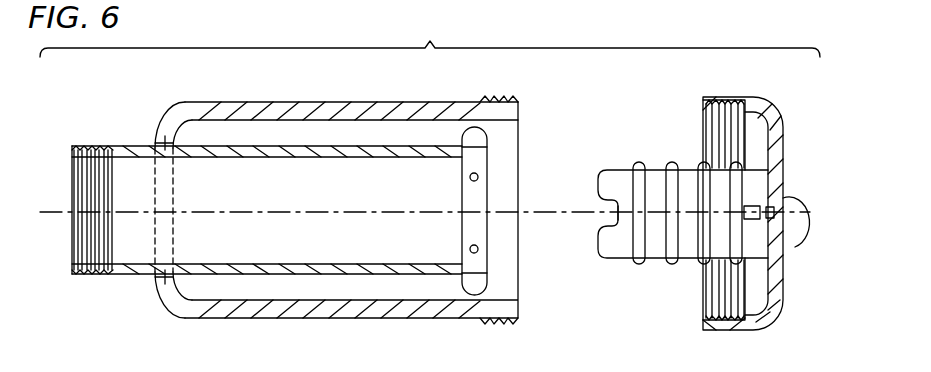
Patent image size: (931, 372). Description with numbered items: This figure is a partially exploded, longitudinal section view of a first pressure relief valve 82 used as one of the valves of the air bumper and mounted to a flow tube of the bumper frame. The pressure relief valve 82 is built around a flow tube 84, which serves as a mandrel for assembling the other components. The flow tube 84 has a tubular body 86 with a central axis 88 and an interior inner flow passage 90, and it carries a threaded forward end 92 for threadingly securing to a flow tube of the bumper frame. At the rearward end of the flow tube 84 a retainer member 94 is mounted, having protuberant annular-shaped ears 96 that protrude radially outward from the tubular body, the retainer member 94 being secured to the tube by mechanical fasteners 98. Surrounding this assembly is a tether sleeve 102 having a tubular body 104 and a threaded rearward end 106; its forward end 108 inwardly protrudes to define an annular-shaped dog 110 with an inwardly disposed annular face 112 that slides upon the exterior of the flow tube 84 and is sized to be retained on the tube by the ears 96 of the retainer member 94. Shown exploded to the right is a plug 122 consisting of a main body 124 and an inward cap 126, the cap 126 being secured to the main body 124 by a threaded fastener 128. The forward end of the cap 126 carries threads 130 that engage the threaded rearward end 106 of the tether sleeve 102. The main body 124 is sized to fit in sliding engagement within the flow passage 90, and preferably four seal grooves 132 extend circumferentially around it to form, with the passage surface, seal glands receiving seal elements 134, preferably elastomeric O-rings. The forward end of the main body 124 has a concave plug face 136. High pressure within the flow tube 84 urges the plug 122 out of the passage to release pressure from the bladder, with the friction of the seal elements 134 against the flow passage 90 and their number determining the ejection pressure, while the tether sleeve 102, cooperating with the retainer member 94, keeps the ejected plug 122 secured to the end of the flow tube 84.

The pressure relief valve 82 is at (140, 132).
The flow tube 84 is at (349, 145).
The tubular body 86 is at (135, 273).
The central axis 88 is at (57, 214).
The inner flow passage 90 is at (360, 264).
The threaded forward end 92 is at (92, 162).
The retainer member 94 is at (494, 158).
The annular-shaped ears 96 is at (478, 137).
The mechanical fasteners 98 is at (480, 250).
The tether sleeve 102 is at (318, 96).
The tubular body 104 is at (212, 312).
The threaded rearward end 106 is at (500, 322).
The forward end 108 is at (168, 301).
The annular-shaped dog 110 is at (170, 268).
The annular face 112 is at (166, 150).
The plug 122 is at (791, 188).
The main body 124 is at (688, 252).
The cap 126 is at (768, 110).
The threaded fastener 128 is at (804, 230).
The threads 130 is at (716, 118).
The seal grooves 132 is at (632, 262).
The seal elements 134 is at (640, 162).
The plug face 136 is at (618, 206).